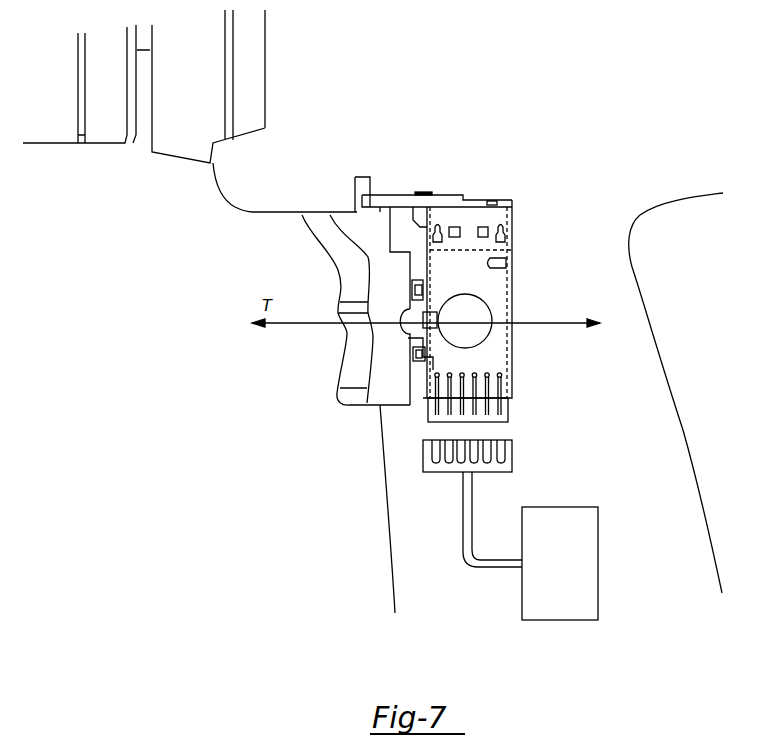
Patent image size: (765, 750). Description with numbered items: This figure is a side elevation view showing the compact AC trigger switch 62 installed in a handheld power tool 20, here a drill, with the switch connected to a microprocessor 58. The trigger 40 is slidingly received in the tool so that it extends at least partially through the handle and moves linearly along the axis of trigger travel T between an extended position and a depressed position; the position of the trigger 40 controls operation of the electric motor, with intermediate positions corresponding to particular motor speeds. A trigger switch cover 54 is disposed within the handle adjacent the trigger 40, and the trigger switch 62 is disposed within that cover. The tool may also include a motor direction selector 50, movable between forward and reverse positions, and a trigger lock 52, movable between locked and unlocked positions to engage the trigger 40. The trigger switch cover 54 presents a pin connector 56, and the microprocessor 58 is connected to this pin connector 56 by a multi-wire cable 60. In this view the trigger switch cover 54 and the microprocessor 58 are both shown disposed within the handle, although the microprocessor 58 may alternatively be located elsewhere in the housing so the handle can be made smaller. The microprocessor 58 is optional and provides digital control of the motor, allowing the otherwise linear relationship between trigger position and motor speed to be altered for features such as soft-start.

The handheld power tool 20 is at (452, 79).
The trigger 40 is at (382, 272).
The motor direction selector 50 is at (398, 197).
The trigger lock 52 is at (470, 305).
The trigger switch cover 54 is at (493, 213).
The pin connector 56 is at (495, 418).
The microprocessor 58 is at (557, 617).
The multi-wire cable 60 is at (468, 493).
The trigger switch 62 is at (512, 309).